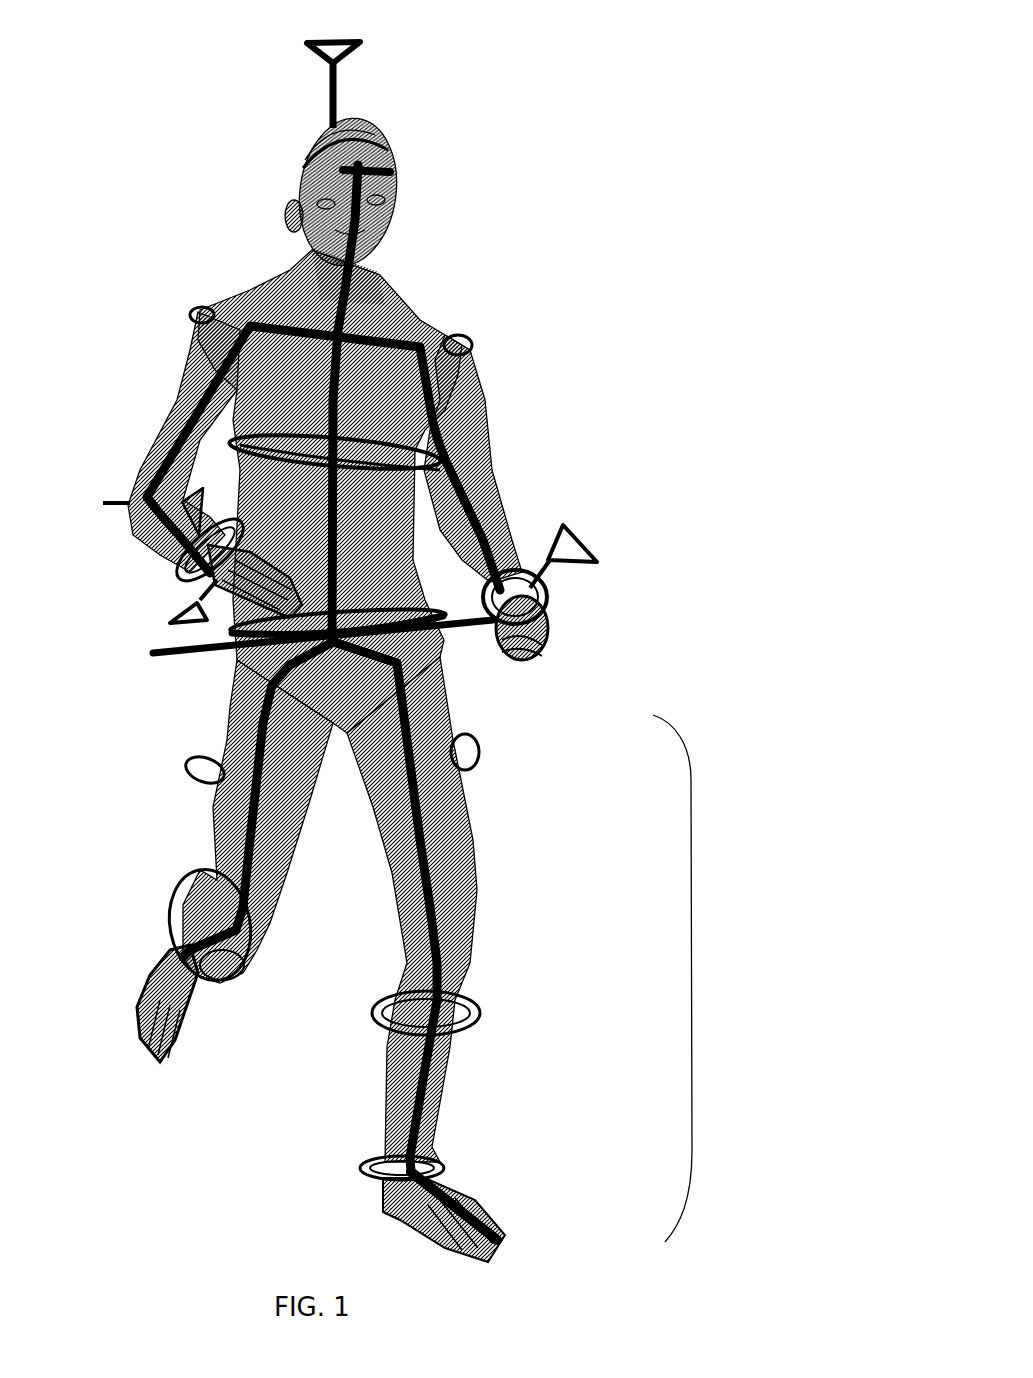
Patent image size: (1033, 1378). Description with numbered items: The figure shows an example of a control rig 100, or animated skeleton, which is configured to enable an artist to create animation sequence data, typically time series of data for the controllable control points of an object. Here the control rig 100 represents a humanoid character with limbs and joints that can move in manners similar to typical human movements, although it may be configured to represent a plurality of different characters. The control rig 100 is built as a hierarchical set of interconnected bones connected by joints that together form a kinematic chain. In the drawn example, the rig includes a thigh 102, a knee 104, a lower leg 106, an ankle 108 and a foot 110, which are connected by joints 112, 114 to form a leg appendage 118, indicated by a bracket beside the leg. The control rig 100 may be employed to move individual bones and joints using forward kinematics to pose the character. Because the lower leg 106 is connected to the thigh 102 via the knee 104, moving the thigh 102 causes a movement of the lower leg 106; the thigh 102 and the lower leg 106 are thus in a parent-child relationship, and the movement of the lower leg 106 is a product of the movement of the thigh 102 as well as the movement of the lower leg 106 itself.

The control rig 100 is at (686, 25).
The thigh 102 is at (428, 795).
The knee 104 is at (458, 917).
The joint 112 is at (445, 923).
The lower leg 106 is at (447, 1075).
The ankle 108 is at (420, 1145).
The joint 114 is at (450, 1170).
The foot 110 is at (470, 1200).
The leg appendage 118 is at (692, 975).